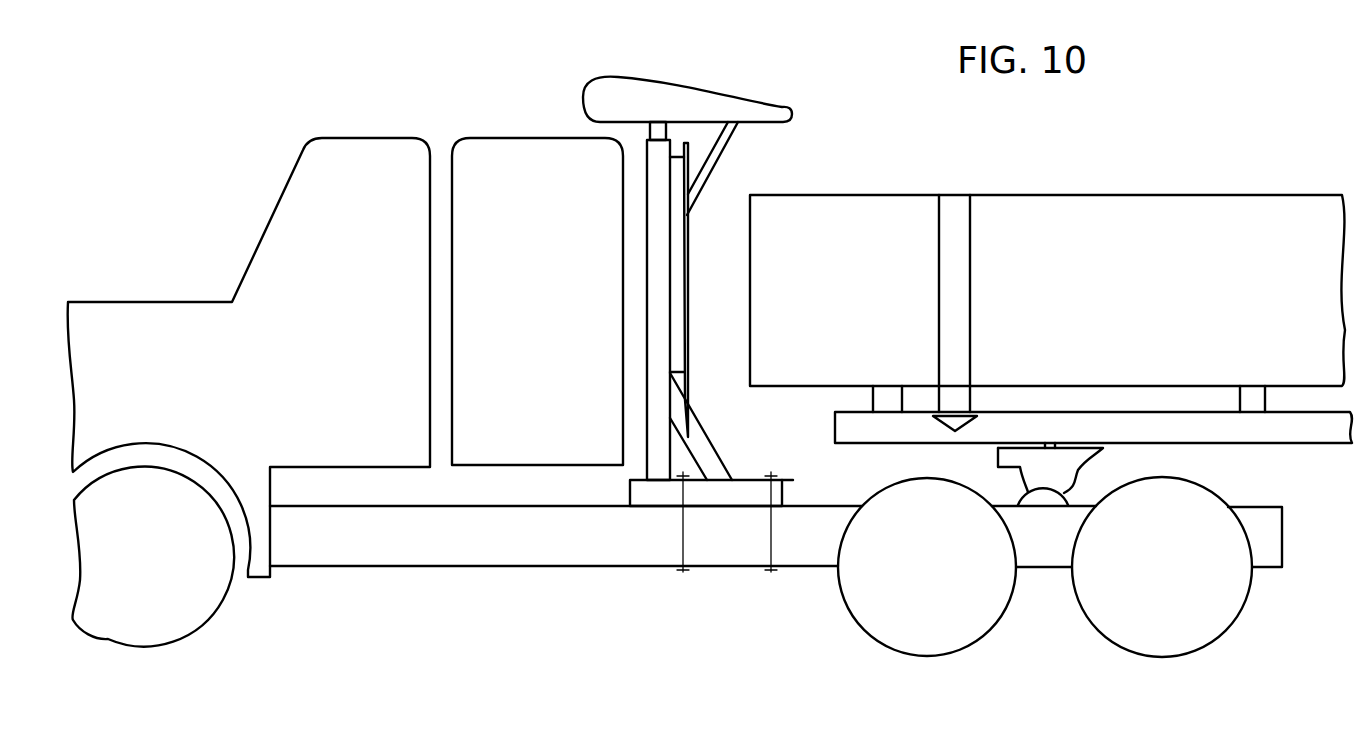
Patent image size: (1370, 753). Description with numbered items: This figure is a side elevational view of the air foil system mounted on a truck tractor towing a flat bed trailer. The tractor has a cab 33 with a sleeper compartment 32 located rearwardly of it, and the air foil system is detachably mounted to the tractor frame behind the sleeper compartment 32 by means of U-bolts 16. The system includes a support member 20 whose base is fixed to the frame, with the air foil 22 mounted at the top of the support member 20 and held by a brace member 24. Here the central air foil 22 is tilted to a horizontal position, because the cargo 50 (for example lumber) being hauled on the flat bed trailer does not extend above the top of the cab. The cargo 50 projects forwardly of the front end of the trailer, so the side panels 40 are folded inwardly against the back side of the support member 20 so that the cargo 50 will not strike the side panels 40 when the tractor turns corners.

The U-bolts 16 is at (770, 568).
The support member 20 is at (646, 468).
The air foil 22 is at (683, 95).
The brace member 24 is at (733, 133).
The sleeper compartment 32 is at (507, 138).
The cab 33 is at (333, 138).
The side panels 40 is at (702, 335).
The cargo 50 is at (1072, 213).